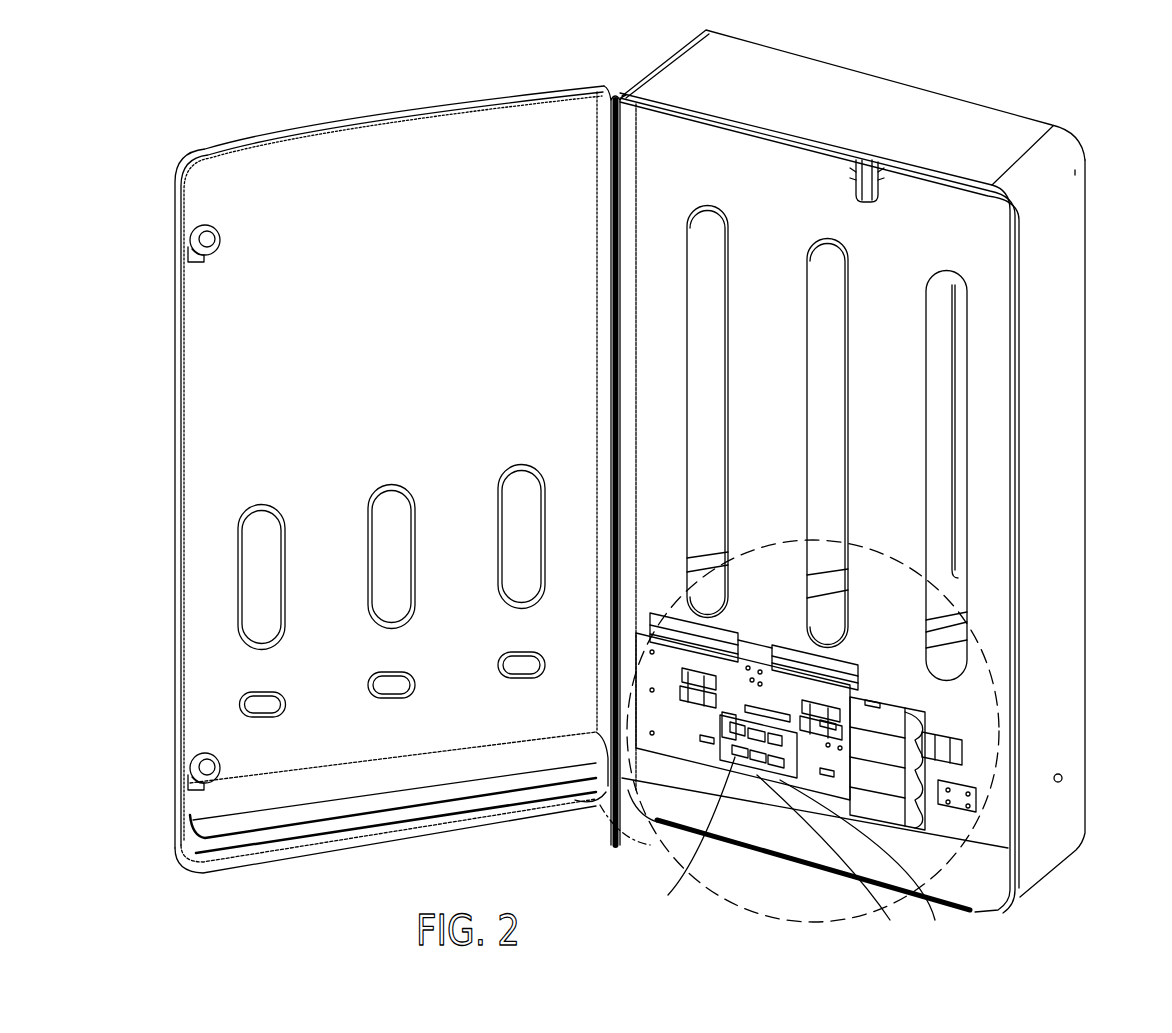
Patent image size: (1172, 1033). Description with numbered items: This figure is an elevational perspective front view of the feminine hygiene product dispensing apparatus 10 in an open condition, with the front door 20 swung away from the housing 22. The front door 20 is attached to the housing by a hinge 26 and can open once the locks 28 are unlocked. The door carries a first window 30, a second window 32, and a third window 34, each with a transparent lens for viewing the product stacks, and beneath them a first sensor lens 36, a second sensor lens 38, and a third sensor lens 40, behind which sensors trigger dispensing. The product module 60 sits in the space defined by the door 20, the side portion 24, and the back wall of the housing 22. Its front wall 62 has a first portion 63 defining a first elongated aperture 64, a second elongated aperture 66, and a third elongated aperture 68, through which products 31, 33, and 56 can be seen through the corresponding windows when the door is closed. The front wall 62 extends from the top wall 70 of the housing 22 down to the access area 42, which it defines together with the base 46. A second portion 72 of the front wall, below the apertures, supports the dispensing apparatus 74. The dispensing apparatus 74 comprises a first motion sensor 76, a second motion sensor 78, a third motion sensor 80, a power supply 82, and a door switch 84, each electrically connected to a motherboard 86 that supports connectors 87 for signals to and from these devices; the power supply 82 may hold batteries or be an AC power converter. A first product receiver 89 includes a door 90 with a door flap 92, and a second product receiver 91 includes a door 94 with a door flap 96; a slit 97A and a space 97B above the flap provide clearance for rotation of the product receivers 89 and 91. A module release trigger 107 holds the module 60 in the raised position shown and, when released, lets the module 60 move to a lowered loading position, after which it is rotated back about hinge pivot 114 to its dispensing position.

The feminine hygiene product dispensing apparatus 10 is at (1107, 94).
The front door 20 is at (255, 165).
The housing 22 is at (1090, 420).
The side portion 24 is at (1070, 556).
The hinge 26 is at (605, 232).
The locks 28 is at (188, 232).
The first window 30 is at (508, 460).
The product 31 is at (706, 548).
The second window 32 is at (381, 478).
The product 33 is at (826, 580).
The third window 34 is at (255, 505).
The first sensor lens 36 is at (494, 654).
The second sensor lens 38 is at (366, 672).
The third sensor lens 40 is at (238, 690).
The access area 42 is at (608, 775).
The base 46 is at (980, 885).
The product 56 is at (962, 648).
The product module 60 is at (758, 190).
The front wall 62 is at (993, 265).
The first portion 63 is at (756, 310).
The first elongated aperture 64 is at (690, 205).
The second elongated aperture 66 is at (812, 238).
The third elongated aperture 68 is at (933, 268).
The top wall 70 is at (985, 118).
The second portion 72 is at (997, 798).
The dispensing apparatus 74 is at (655, 832).
The first motion sensor 76 is at (666, 700).
The second motion sensor 78 is at (830, 720).
The third motion sensor 80 is at (952, 742).
The power supply 82 is at (863, 864).
The door switch 84 is at (977, 810).
The motherboard 86 is at (696, 840).
The connectors 87 is at (829, 861).
The first product receiver 89 is at (750, 638).
The door 90 is at (651, 644).
The second product receiver 91 is at (720, 680).
The door flap 92 is at (651, 624).
The door 94 is at (866, 690).
The door flap 96 is at (815, 652).
The space or slit 97A is at (677, 613).
The space 97B is at (795, 638).
The module release trigger 107 is at (868, 148).
The hinge pivot 114 is at (1074, 775).